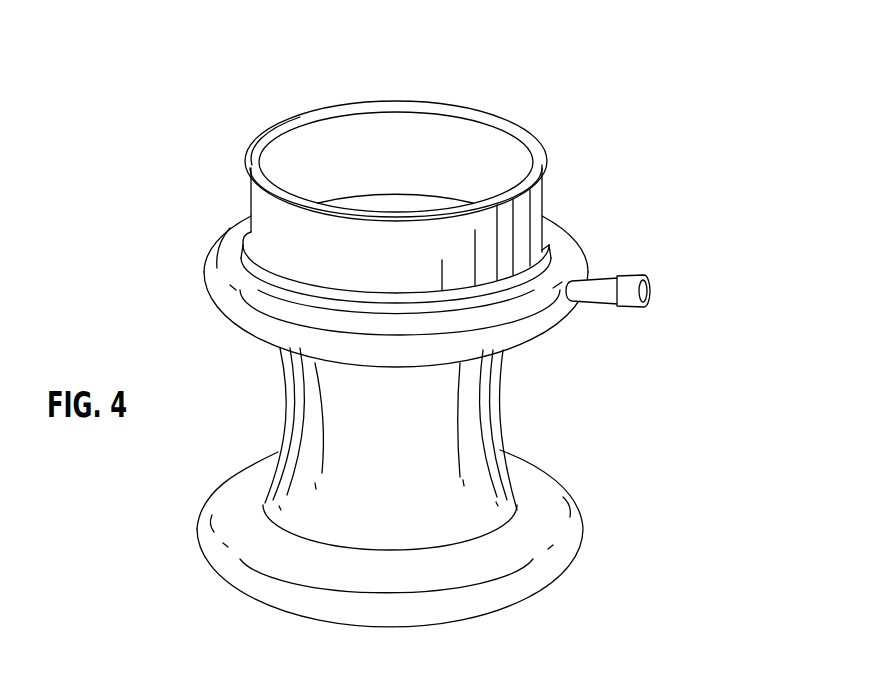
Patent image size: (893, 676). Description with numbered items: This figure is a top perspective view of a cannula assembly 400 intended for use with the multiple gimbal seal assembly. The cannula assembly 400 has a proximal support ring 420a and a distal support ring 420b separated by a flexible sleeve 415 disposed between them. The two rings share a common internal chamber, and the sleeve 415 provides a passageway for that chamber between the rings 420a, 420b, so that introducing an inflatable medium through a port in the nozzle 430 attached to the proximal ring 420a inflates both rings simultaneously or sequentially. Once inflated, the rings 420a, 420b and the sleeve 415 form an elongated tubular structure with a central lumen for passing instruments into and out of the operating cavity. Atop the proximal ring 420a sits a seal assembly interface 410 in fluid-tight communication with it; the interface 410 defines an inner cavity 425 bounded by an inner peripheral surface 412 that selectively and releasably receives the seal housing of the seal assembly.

The cannula assembly 400 is at (658, 174).
The seal assembly interface 410 is at (541, 142).
The inner peripheral surface 412 is at (343, 128).
The flexible sleeve 415 is at (497, 410).
The proximal support ring 420a is at (558, 252).
The distal support ring 420b is at (557, 517).
The inner cavity 425 is at (407, 180).
The nozzle 430 is at (638, 276).